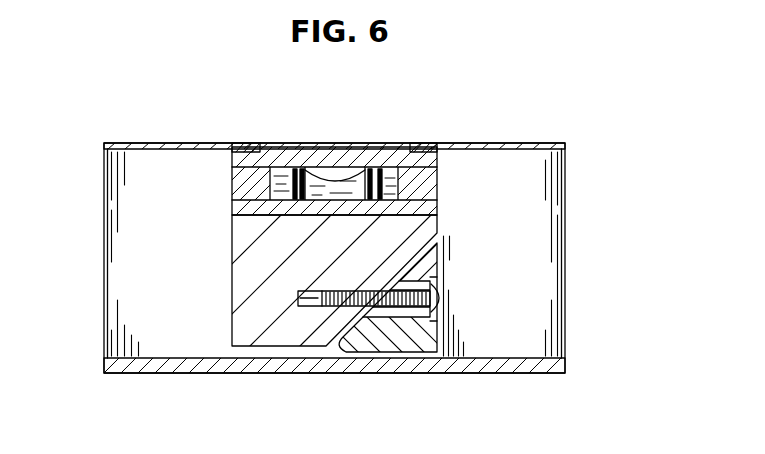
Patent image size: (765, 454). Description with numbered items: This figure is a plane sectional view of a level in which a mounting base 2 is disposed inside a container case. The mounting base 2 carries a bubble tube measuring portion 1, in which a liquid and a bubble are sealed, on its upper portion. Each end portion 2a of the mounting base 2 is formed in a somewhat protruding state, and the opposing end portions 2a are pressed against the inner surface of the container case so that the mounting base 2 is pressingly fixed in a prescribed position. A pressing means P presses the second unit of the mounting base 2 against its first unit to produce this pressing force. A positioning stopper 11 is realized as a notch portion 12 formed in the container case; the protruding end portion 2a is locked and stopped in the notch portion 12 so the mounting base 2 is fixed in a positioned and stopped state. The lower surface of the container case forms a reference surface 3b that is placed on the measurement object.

The bubble tube measuring portion 1 is at (333, 173).
The mounting base 2 is at (472, 237).
The end portion 2a is at (423, 146).
The reference surface 3b is at (478, 373).
The positioning stopper 11 is at (339, 153).
The notch portion 12 is at (258, 148).
The pressing means P is at (473, 292).